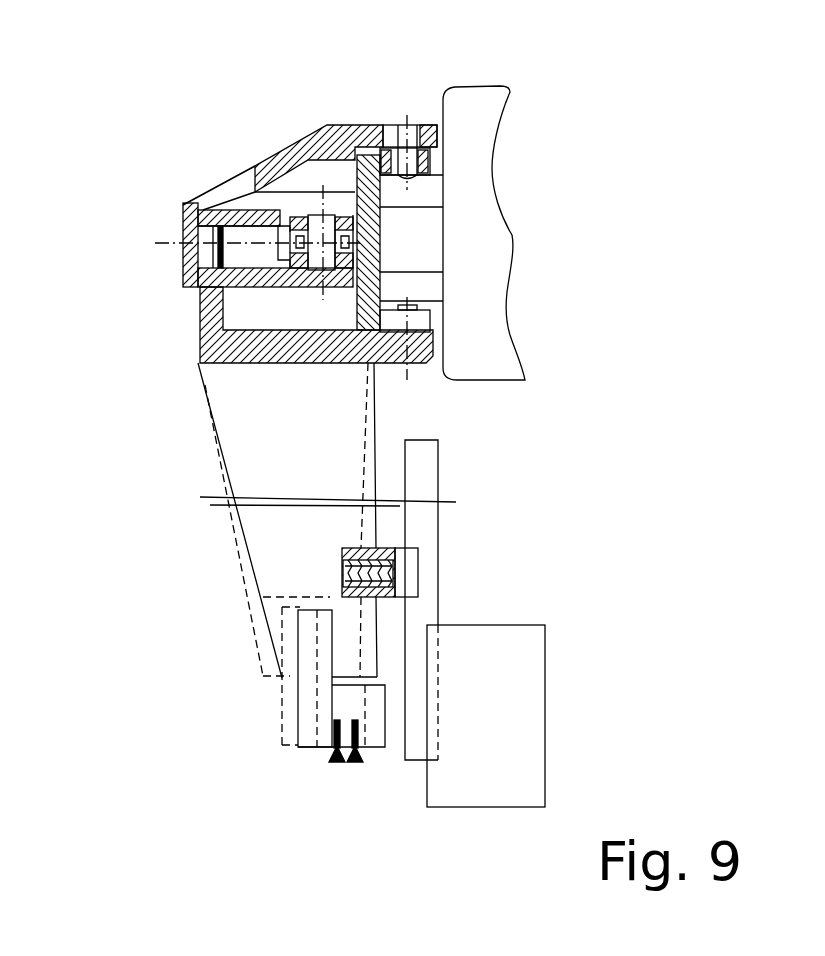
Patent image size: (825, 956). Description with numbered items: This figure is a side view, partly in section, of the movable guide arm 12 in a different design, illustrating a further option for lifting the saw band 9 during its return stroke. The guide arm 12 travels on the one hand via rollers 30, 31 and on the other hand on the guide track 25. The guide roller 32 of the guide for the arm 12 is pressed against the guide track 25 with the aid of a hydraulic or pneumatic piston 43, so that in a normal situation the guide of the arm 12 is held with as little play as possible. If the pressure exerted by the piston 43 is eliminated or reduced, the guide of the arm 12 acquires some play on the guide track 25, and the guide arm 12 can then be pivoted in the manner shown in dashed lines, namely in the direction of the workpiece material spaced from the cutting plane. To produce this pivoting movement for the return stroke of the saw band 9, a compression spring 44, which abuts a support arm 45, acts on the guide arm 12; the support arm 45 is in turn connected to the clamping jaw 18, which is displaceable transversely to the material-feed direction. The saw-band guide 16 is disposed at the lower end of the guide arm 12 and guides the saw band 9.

The piston 43 is at (247, 237).
The roller 30 is at (428, 162).
The guide track 25 is at (381, 230).
The guide roller 32 is at (357, 241).
The roller 31 is at (420, 321).
The support arm 45 is at (420, 467).
The compression spring 44 is at (388, 562).
The guide arm 12 is at (290, 430).
The clamping jaw 18 is at (495, 723).
The saw-band guide 16 is at (324, 720).
The saw band 9 is at (361, 762).